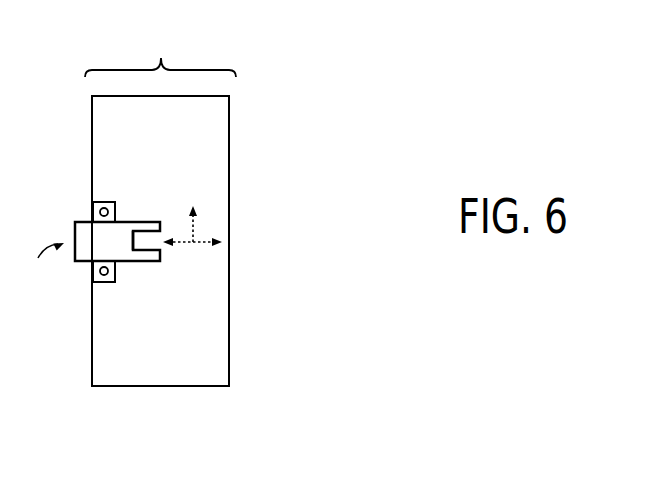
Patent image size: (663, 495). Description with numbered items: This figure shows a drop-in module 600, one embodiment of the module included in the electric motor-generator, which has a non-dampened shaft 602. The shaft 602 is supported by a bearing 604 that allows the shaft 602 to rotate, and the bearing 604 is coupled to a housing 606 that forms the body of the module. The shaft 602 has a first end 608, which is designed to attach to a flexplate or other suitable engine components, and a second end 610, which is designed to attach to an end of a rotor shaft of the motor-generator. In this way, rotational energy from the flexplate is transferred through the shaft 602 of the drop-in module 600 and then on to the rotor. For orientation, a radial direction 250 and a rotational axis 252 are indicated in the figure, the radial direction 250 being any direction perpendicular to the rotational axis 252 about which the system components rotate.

The drop-in module 600 is at (160, 55).
The housing 606 is at (92, 133).
The non-dampened shaft 602 is at (125, 227).
The bearing 604 is at (93, 208).
The first end 608 is at (43, 265).
The second end 610 is at (170, 263).
The radial direction 250 is at (190, 230).
The rotational axis 252 is at (200, 245).